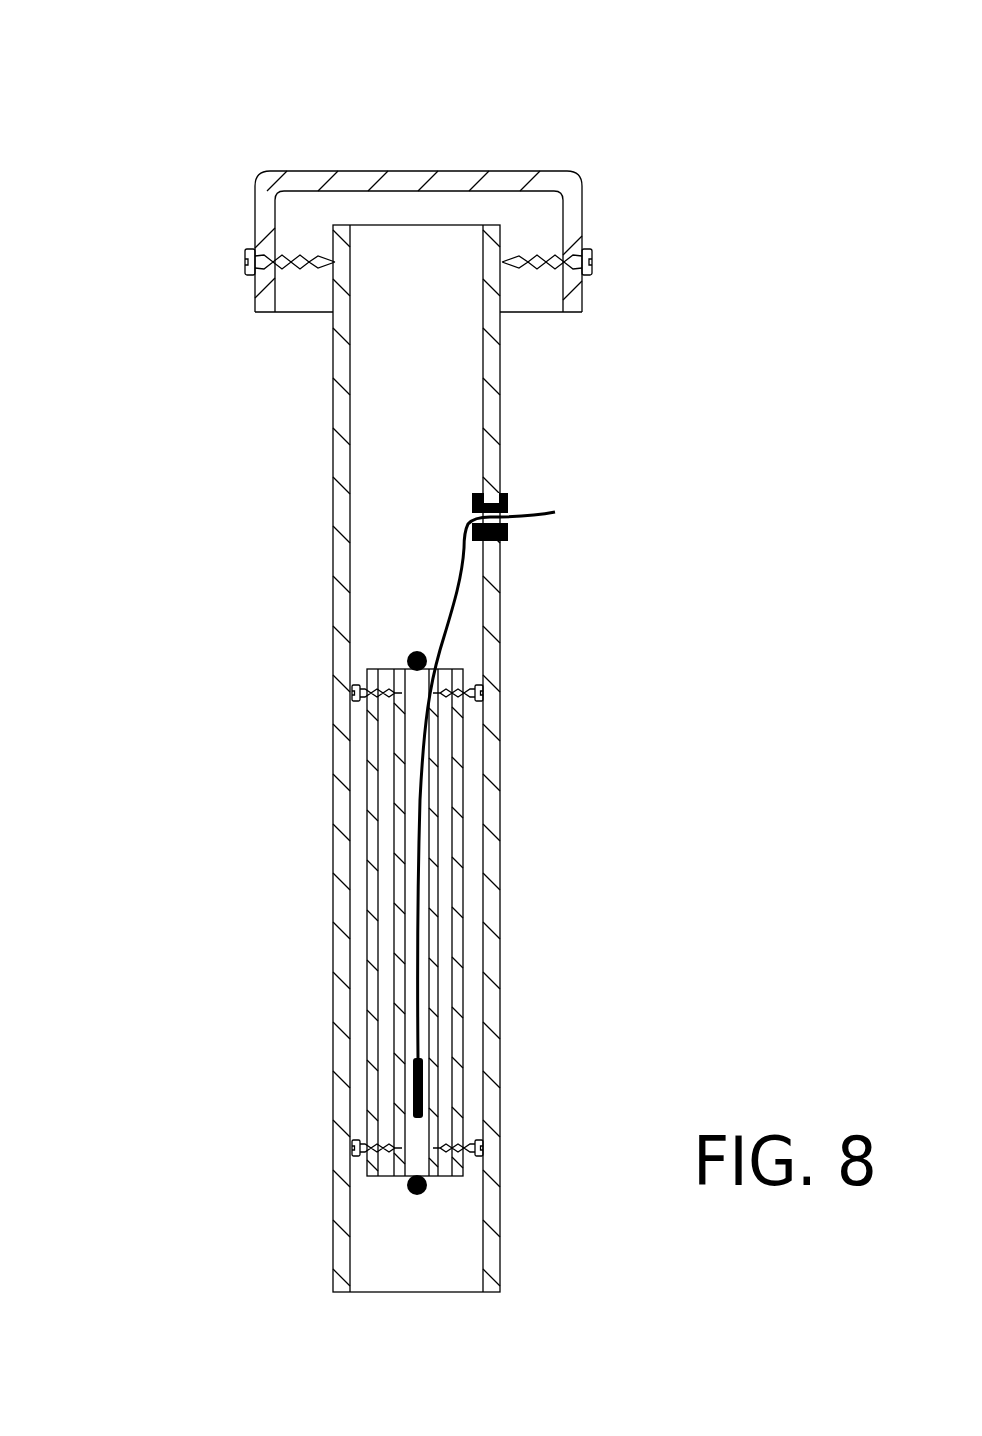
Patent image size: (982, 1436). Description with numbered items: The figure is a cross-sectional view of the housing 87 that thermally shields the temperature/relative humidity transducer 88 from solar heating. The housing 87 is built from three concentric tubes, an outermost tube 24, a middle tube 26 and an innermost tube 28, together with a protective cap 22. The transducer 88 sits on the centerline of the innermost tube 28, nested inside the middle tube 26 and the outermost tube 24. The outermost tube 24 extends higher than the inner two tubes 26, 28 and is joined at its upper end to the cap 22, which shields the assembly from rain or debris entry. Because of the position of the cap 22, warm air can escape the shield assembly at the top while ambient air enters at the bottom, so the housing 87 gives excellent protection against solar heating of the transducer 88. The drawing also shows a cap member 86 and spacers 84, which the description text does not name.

The housing 87 is at (437, 160).
The cap 86 is at (293, 212).
The protective cap 22 is at (260, 294).
The outermost tube 24 is at (327, 492).
The spacer bumper 84 is at (408, 651).
The middle tube 26 is at (367, 748).
The innermost tube 28 is at (398, 908).
The temperature/relative humidity transducer 88 is at (413, 1085).